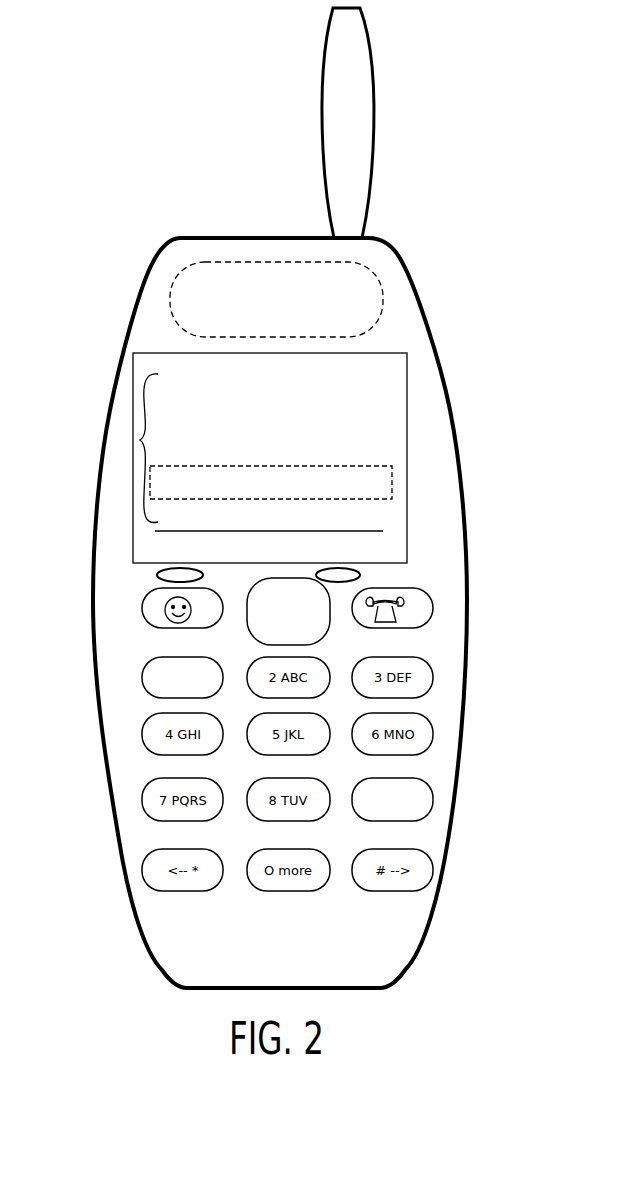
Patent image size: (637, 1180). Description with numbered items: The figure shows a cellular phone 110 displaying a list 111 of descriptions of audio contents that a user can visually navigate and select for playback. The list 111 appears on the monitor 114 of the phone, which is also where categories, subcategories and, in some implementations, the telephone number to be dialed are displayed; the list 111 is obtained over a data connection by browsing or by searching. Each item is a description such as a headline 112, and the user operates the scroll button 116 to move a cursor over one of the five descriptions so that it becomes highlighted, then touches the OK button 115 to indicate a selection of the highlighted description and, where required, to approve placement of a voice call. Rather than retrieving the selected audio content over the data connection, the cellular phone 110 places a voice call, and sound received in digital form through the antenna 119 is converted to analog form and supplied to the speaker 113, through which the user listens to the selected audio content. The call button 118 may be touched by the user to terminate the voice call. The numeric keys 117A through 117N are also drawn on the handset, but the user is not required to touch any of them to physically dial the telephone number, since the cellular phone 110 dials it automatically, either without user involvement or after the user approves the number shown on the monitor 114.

The cellular phone 110 is at (143, 327).
The list of descriptions of audio contents 111 is at (140, 440).
The headline 112 is at (392, 483).
The speaker 113 is at (227, 280).
The monitor 114 is at (408, 368).
The OK button 115 is at (157, 577).
The scroll button 116 is at (305, 620).
The numeric key 117A is at (155, 683).
The numeric key 117N is at (422, 808).
The call button 118 is at (412, 603).
The antenna 119 is at (355, 162).